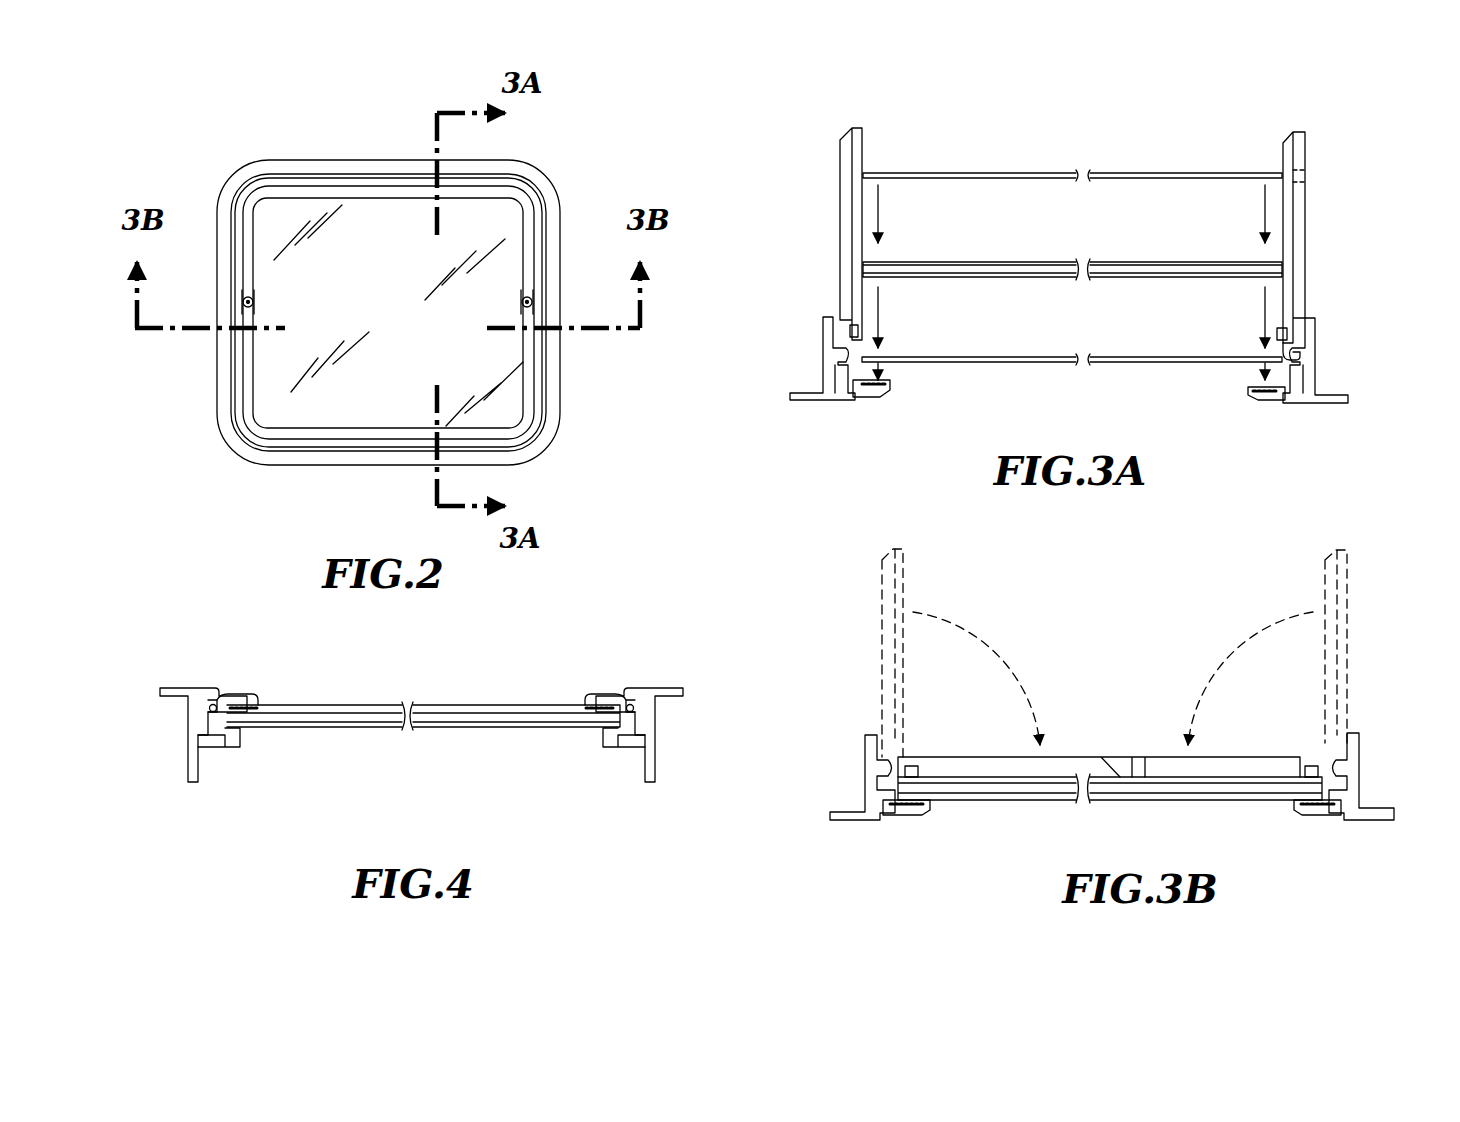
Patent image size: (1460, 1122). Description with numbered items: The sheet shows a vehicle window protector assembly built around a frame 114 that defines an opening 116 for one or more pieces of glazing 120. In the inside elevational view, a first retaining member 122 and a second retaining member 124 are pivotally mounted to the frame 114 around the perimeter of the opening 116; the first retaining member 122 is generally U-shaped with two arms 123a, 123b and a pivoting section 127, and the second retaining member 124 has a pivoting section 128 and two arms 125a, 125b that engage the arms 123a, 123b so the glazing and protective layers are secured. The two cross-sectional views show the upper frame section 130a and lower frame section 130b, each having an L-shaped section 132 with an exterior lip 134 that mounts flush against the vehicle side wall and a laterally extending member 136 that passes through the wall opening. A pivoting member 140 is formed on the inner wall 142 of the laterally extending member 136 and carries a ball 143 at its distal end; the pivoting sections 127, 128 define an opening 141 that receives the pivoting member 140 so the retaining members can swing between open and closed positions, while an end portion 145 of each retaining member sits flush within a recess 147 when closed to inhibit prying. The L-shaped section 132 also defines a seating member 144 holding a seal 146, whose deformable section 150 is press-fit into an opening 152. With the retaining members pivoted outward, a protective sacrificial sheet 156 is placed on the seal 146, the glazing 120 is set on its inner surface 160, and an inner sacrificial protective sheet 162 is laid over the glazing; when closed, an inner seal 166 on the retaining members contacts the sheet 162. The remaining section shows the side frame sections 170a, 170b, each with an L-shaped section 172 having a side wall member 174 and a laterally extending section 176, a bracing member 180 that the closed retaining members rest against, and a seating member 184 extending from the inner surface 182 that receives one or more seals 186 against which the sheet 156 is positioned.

In FIG. 2, the frame 114 is at (316, 165).
In FIG. 2, the opening 116 is at (270, 215).
In FIG. 2, the glazing 120 is at (345, 283).
In FIG. 3A, the glazing 120 is at (1030, 262).
In FIG. 4, the glazing 120 is at (368, 718).
In FIG. 3B, the glazing 120 is at (1099, 767).
In FIG. 2, the first retaining member 122 is at (285, 430).
In FIG. 3A, the first retaining member 122 is at (820, 176).
In FIG. 2, the arm 123a is at (245, 370).
In FIG. 3A, the arm 123a is at (847, 136).
In FIG. 2, the arm 123b is at (540, 365).
In FIG. 2, the second retaining member 124 is at (535, 215).
In FIG. 3A, the second retaining member 124 is at (1320, 178).
In FIG. 2, the arm 125a is at (244, 262).
In FIG. 3A, the arm 125a is at (1286, 145).
In FIG. 2, the arm 125b is at (515, 248).
In FIG. 2, the pivoting section 127 is at (330, 425).
In FIG. 3A, the pivoting section 127 is at (824, 312).
In FIG. 2, the pivoting section 128 is at (388, 190).
In FIG. 3A, the pivoting section 128 is at (1309, 286).
In FIG. 3A, the upper frame section 130a is at (846, 410).
In FIG. 3B, the upper frame section 130a is at (870, 826).
In FIG. 3A, the lower frame section 130b is at (1338, 360).
In FIG. 3B, the lower frame section 130b is at (1386, 826).
In FIG. 3A, the L-shaped section 132 is at (828, 380).
In FIG. 3B, the L-shaped section 132 is at (850, 790).
In FIG. 3A, the exterior lip 134 is at (805, 400).
In FIG. 3A, the laterally extending member 136 is at (824, 320).
In FIG. 3B, the laterally extending member 136 is at (1358, 746).
In FIG. 3A, the pivoting member 140 is at (816, 338).
In FIG. 3B, the pivoting member 140 is at (884, 768).
In FIG. 3A, the opening 141 is at (870, 355).
In FIG. 3A, the inner wall 142 is at (858, 330).
In FIG. 3B, the inner wall 142 is at (1342, 757).
In FIG. 3A, the ball 143 is at (832, 356).
In FIG. 3A, the seating member 144 is at (880, 398).
In FIG. 3B, the seating member 144 is at (905, 816).
In FIG. 3A, the end portion 145 is at (880, 362).
In FIG. 3B, the end portion 145 is at (1352, 774).
In FIG. 3A, the seal 146 is at (890, 384).
In FIG. 3B, the seal 146 is at (925, 810).
In FIG. 3A, the recess 147 is at (842, 386).
In FIG. 3A, the deformable section 150 is at (858, 400).
In FIG. 3A, the opening 152 is at (1291, 396).
In FIG. 3A, the protective sacrificial sheet 156 is at (1083, 340).
In FIG. 4, the protective sacrificial sheet 156 is at (322, 705).
In FIG. 3A, the inner surface 160 is at (1120, 357).
In FIG. 3A, the inner sacrificial protective sheet 162 is at (1000, 173).
In FIG. 4, the inner sacrificial protective sheet 162 is at (310, 727).
In FIG. 3A, the inner seal 166 is at (856, 322).
In FIG. 3B, the inner seal 166 is at (912, 766).
In FIG. 4, the side frame section 170a is at (214, 790).
In FIG. 4, the side frame section 170b is at (652, 796).
In FIG. 4, the L-shaped section 172 is at (168, 714).
In FIG. 4, the side wall member 174 is at (160, 662).
In FIG. 4, the laterally extending section 176 is at (196, 730).
In FIG. 2, the bracing member 180 is at (240, 300).
In FIG. 4, the bracing member 180 is at (226, 745).
In FIG. 4, the inner surface 182 is at (226, 700).
In FIG. 4, the seating member 184 is at (216, 696).
In FIG. 4, the seal 186 is at (246, 706).